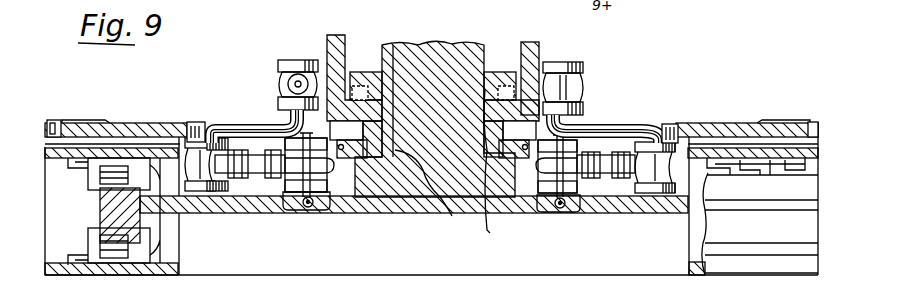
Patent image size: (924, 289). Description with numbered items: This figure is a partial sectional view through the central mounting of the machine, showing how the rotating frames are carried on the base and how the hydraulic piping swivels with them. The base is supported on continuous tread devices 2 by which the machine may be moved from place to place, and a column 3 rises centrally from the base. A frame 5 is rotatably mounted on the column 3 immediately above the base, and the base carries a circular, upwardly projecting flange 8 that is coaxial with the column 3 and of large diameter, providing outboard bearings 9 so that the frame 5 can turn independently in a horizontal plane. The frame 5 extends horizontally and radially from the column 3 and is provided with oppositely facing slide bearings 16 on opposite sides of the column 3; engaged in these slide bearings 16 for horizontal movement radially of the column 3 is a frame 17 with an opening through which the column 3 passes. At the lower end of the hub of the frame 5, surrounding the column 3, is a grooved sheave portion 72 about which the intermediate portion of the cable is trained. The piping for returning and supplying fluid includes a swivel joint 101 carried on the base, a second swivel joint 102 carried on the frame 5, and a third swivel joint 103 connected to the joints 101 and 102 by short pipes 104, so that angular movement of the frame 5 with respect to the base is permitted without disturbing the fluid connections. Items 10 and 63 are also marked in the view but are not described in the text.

The continuous tread devices 2 is at (172, 258).
The column 3 is at (450, 44).
The frame 5 is at (490, 51).
The flange 8 is at (170, 125).
The outboard bearings 9 is at (92, 121).
The bearing housing 10 is at (303, 134).
The slide bearings 16 is at (457, 217).
The frame 17 is at (532, 52).
The end plate 63 is at (45, 124).
The grooved sheave portion 72 is at (355, 148).
The swivel joint 101 is at (337, 213).
The second swivel joint 102 is at (300, 58).
The third swivel joint 103 is at (205, 128).
The short pipes 104 is at (232, 117).